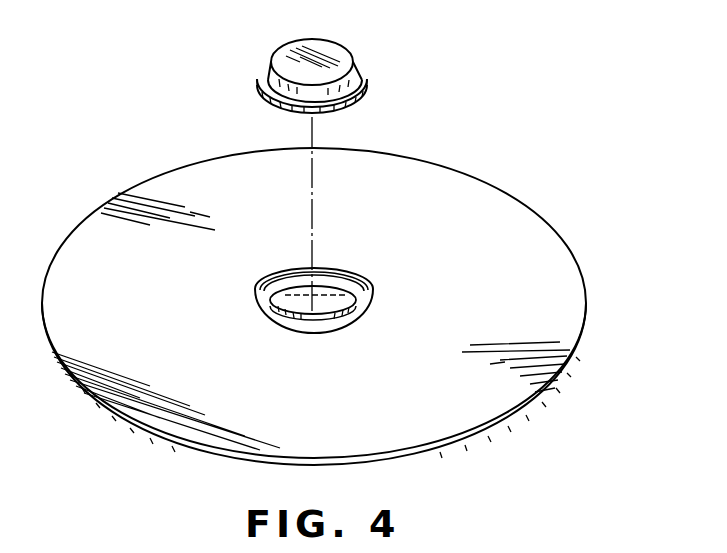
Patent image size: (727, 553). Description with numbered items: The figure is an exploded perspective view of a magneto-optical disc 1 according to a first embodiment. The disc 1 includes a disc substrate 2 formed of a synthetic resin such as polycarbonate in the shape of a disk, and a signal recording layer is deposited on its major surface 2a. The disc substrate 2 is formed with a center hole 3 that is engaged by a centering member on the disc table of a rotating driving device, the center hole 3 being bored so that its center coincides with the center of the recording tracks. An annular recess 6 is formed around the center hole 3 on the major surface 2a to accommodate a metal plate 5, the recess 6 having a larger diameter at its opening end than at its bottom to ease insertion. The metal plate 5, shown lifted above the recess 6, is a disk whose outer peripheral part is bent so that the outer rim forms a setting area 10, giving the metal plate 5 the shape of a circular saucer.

The magneto-optical disc 1 is at (572, 203).
The disc substrate 2 is at (568, 304).
The major surface 2a is at (90, 240).
The center hole 3 is at (343, 296).
The metal plate 5 is at (331, 53).
The annular recess 6 is at (277, 286).
The setting area 10 is at (357, 88).